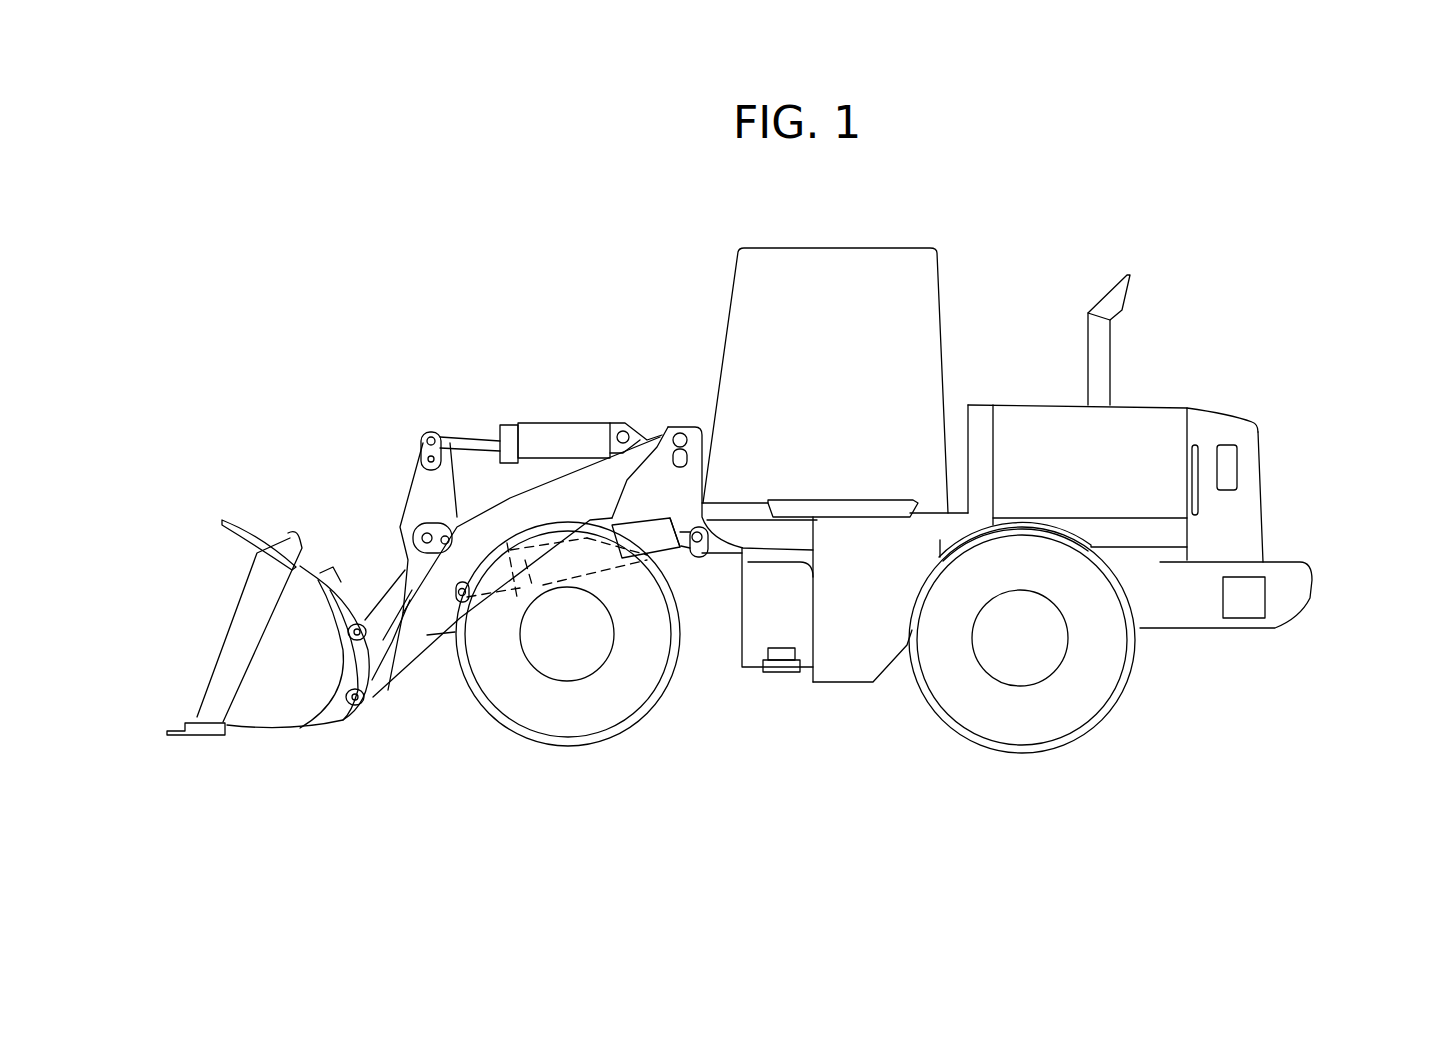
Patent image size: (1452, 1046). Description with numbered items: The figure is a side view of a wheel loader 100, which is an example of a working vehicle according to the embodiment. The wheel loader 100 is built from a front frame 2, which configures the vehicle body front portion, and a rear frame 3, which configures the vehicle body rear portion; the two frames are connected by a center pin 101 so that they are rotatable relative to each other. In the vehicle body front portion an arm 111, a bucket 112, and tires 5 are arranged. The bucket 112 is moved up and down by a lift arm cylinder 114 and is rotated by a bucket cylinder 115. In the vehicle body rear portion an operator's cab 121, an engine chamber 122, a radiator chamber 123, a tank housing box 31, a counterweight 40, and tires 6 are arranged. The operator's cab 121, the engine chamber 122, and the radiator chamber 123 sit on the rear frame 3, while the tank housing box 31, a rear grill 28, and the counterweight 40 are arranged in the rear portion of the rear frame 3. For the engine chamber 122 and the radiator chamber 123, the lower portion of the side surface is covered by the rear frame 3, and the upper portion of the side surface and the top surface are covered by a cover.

The wheel loader 100 is at (1214, 668).
The front frame 2 is at (663, 455).
The rear frame 3 is at (840, 683).
The tires 5 is at (555, 712).
The tires 6 is at (1042, 723).
The rear grill 28 is at (1262, 450).
The tank housing box 31 is at (1267, 604).
The counterweight 40 is at (1282, 590).
The center pin 101 is at (778, 674).
The arm 111 is at (400, 607).
The bucket 112 is at (262, 547).
The lift arm cylinder 114 is at (515, 597).
The bucket cylinder 115 is at (553, 422).
The operator's cab 121 is at (782, 267).
The engine chamber 122 is at (1167, 427).
The radiator chamber 123 is at (1222, 433).